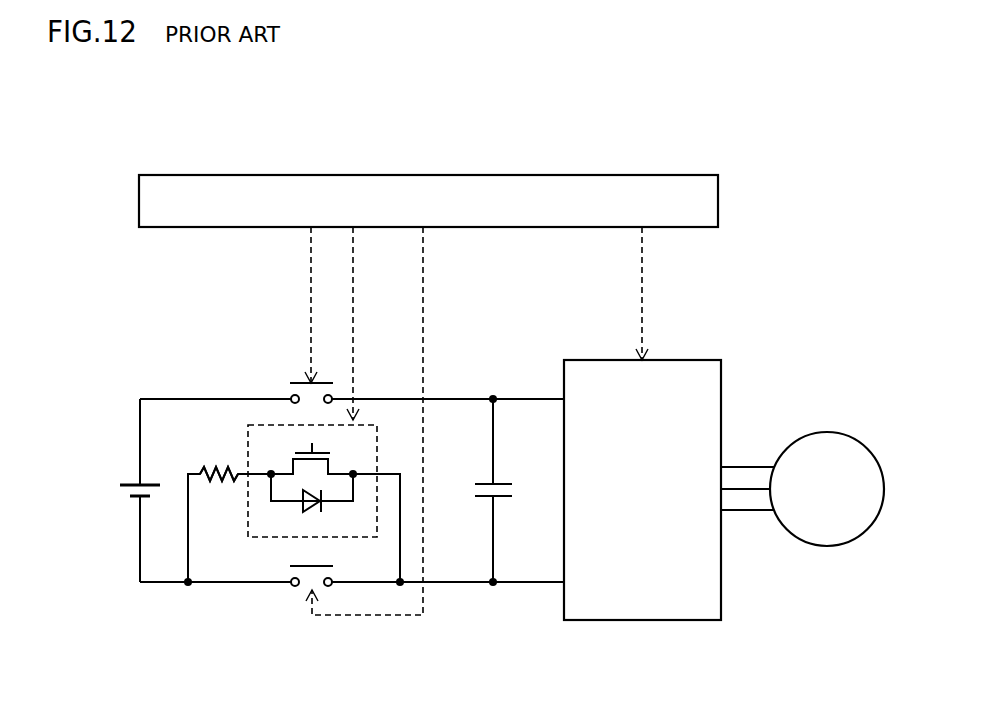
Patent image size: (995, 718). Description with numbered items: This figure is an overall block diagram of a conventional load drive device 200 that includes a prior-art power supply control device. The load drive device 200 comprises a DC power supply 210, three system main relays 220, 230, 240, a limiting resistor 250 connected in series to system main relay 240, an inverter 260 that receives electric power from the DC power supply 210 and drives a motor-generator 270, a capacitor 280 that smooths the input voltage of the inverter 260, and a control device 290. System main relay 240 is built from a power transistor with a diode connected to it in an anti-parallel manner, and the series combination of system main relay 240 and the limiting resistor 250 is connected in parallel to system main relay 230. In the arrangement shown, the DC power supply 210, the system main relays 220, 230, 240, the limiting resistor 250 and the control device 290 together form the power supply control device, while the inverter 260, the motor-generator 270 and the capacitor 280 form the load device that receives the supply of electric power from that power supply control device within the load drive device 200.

The load drive device 200 is at (152, 118).
The DC power supply 210 is at (131, 483).
The system main relay 220 is at (300, 379).
The system main relay 230 is at (316, 565).
The system main relay 240 is at (248, 440).
The limiting resistor 250 is at (216, 483).
The inverter 260 is at (668, 359).
The motor-generator 270 is at (825, 432).
The capacitor 280 is at (486, 483).
The control device 290 is at (667, 174).